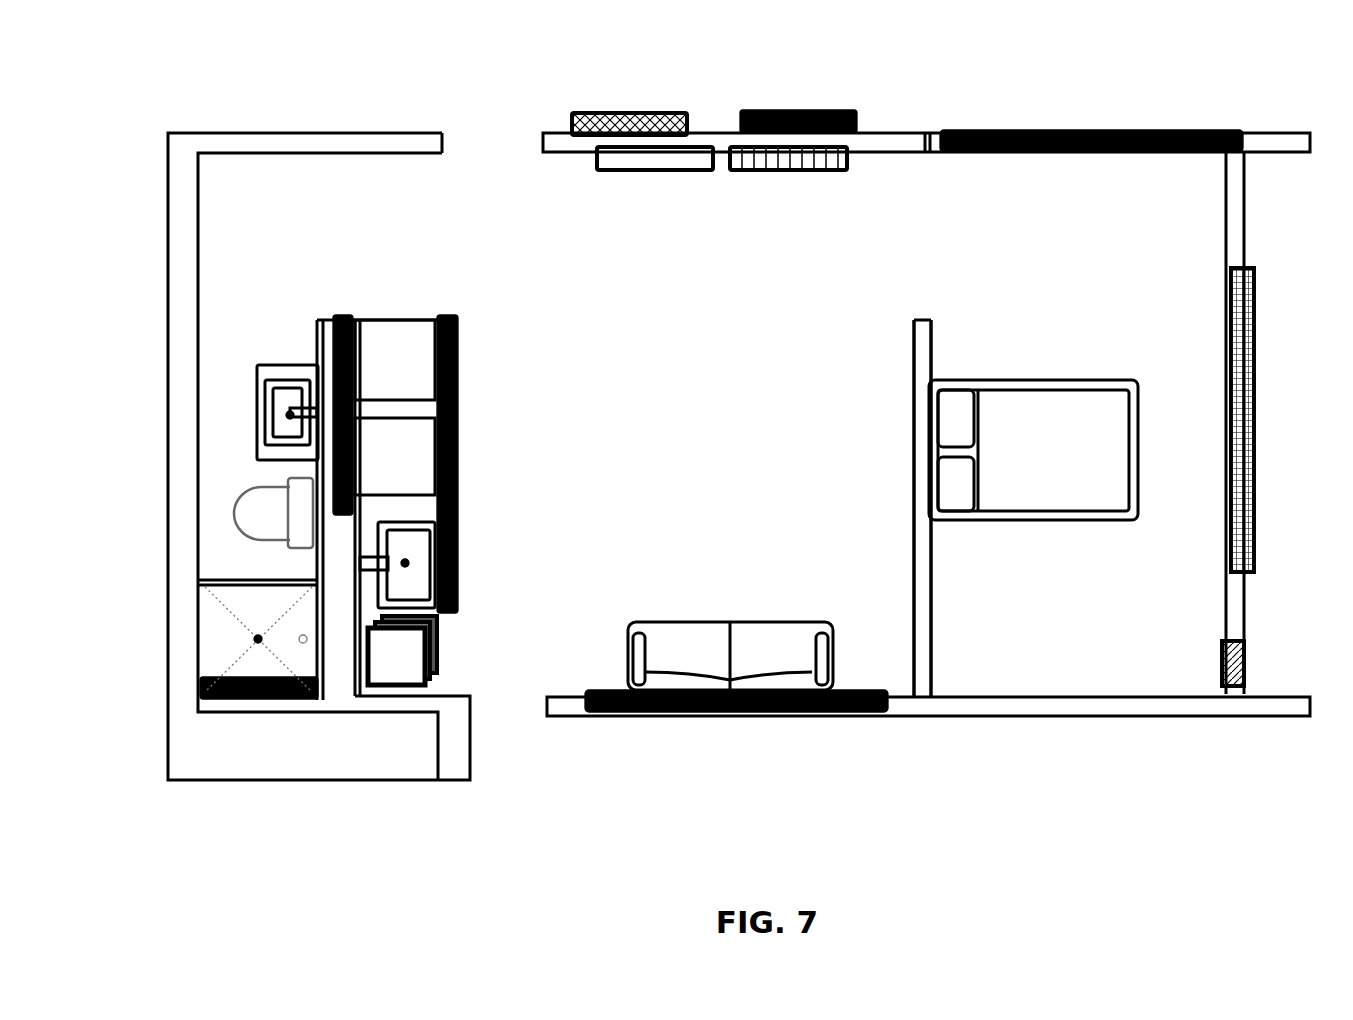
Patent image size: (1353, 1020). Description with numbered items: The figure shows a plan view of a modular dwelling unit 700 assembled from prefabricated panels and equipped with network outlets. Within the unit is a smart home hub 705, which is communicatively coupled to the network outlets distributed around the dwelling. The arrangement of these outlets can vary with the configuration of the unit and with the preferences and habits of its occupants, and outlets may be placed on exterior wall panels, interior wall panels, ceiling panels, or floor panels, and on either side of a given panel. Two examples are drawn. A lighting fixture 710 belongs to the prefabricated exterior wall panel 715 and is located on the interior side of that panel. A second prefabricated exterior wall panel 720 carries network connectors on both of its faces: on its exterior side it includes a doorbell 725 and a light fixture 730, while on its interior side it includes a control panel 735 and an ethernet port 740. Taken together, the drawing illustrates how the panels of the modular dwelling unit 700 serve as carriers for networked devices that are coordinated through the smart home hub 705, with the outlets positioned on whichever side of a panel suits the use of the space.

The modular dwelling unit 700 is at (205, 62).
The smart home hub 705 is at (435, 646).
The lighting fixture 710 is at (672, 712).
The prefabricated exterior wall panel 715 is at (893, 732).
The prefabricated exterior wall panel 720 is at (893, 98).
The doorbell 725 is at (630, 112).
The light fixture 730 is at (797, 110).
The control panel 735 is at (645, 170).
The ethernet port 740 is at (787, 170).